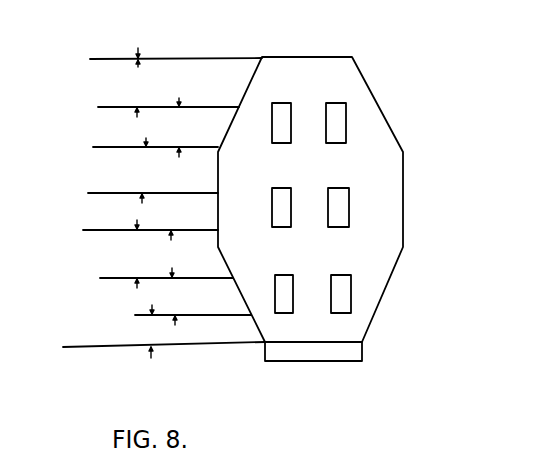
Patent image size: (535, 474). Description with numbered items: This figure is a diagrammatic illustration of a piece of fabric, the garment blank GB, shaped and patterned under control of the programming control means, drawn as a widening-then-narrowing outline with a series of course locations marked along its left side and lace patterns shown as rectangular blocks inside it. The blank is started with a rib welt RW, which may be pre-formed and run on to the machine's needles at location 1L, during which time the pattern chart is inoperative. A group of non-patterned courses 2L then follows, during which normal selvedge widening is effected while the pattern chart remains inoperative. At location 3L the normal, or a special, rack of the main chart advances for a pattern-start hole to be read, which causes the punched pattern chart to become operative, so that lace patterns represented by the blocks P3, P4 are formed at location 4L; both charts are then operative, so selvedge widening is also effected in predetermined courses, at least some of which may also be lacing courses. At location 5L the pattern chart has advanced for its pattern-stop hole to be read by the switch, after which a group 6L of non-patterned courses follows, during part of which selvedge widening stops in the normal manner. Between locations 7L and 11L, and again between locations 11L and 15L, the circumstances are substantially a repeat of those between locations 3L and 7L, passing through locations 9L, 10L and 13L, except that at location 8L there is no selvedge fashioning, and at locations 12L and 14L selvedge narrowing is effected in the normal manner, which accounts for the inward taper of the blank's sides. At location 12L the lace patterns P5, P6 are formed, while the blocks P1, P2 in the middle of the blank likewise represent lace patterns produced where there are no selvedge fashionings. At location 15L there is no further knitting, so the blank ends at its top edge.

The garment blank GB is at (315, 62).
The rib welt RW is at (343, 352).
The lace pattern block P1 is at (280, 200).
The lace pattern block P2 is at (340, 207).
The lace pattern block P3 is at (290, 280).
The lace pattern block P4 is at (343, 295).
The lace pattern block P5 is at (282, 108).
The lace pattern block P6 is at (338, 125).
The location 1L is at (151, 347).
The group of non-patterned courses 2L is at (183, 336).
The location 3L is at (178, 317).
The location 4L is at (174, 303).
The location 5L is at (148, 279).
The group of non-patterned courses 6L is at (153, 264).
The location 7L is at (137, 232).
The location 8L is at (160, 217).
The location 9L is at (136, 190).
The location 10L is at (157, 175).
The location 11L is at (140, 147).
The location 12L is at (163, 127).
The location 13L is at (147, 104).
The location 14L is at (151, 77).
The location 15L is at (157, 60).